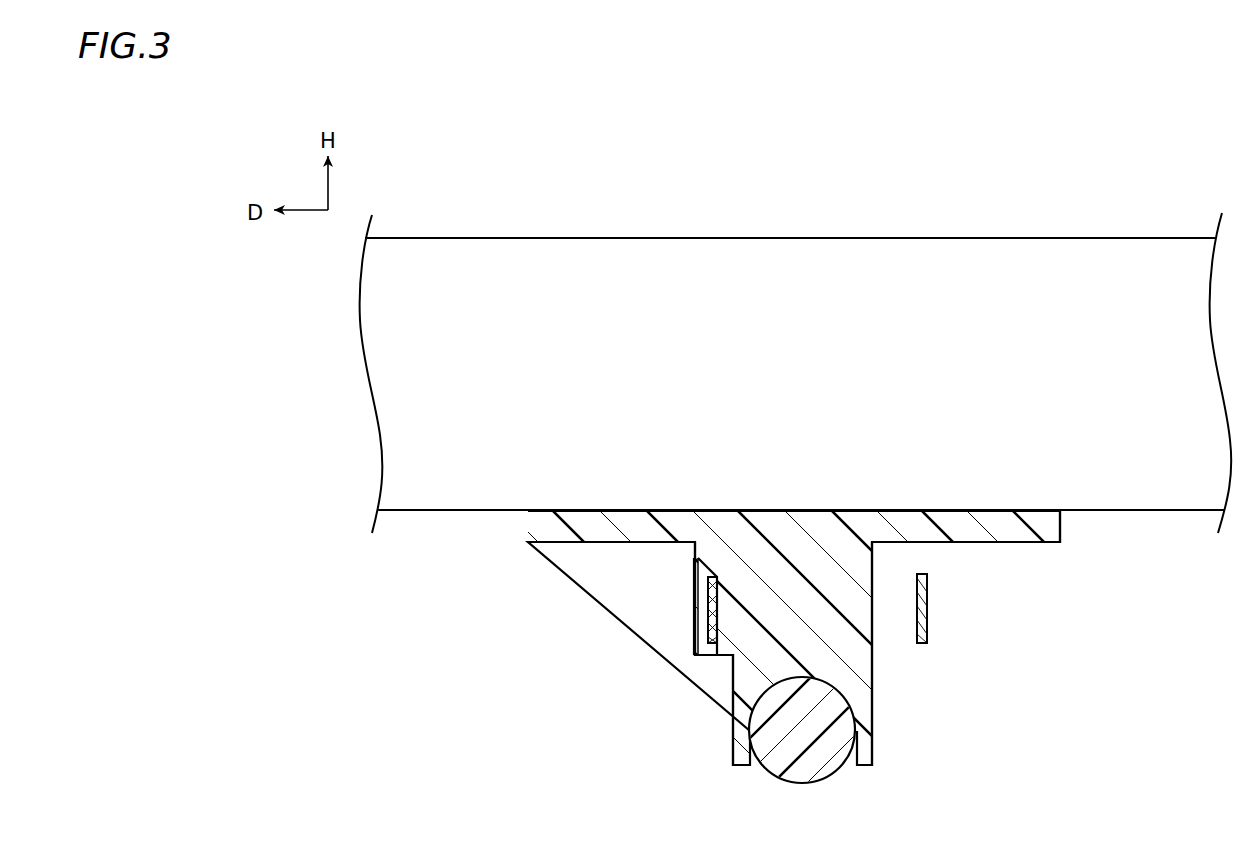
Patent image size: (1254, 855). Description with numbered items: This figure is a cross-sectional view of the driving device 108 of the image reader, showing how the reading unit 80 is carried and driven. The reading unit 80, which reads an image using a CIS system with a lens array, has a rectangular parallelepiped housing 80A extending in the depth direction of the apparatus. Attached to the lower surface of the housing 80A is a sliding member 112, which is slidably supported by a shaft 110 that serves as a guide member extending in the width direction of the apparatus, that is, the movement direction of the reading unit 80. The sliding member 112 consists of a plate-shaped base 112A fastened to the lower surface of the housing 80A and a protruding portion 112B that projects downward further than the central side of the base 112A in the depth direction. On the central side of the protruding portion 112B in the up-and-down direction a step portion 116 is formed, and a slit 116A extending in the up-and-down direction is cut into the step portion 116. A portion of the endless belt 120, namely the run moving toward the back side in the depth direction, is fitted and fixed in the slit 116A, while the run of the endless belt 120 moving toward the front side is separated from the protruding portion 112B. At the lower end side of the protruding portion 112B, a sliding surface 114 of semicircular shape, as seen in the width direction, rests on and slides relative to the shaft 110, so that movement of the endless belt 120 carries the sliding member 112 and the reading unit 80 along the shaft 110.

The reading unit 80 is at (1039, 169).
The housing 80A is at (1078, 237).
The driving device 108 is at (1121, 713).
The shaft 110 is at (850, 768).
The sliding member 112 is at (873, 637).
The base 112A is at (611, 549).
The protruding portion 112B is at (687, 618).
The sliding surface 114 is at (842, 710).
The step portion 116 is at (698, 656).
The slit 116A is at (698, 633).
The endless belt 120 is at (707, 597).